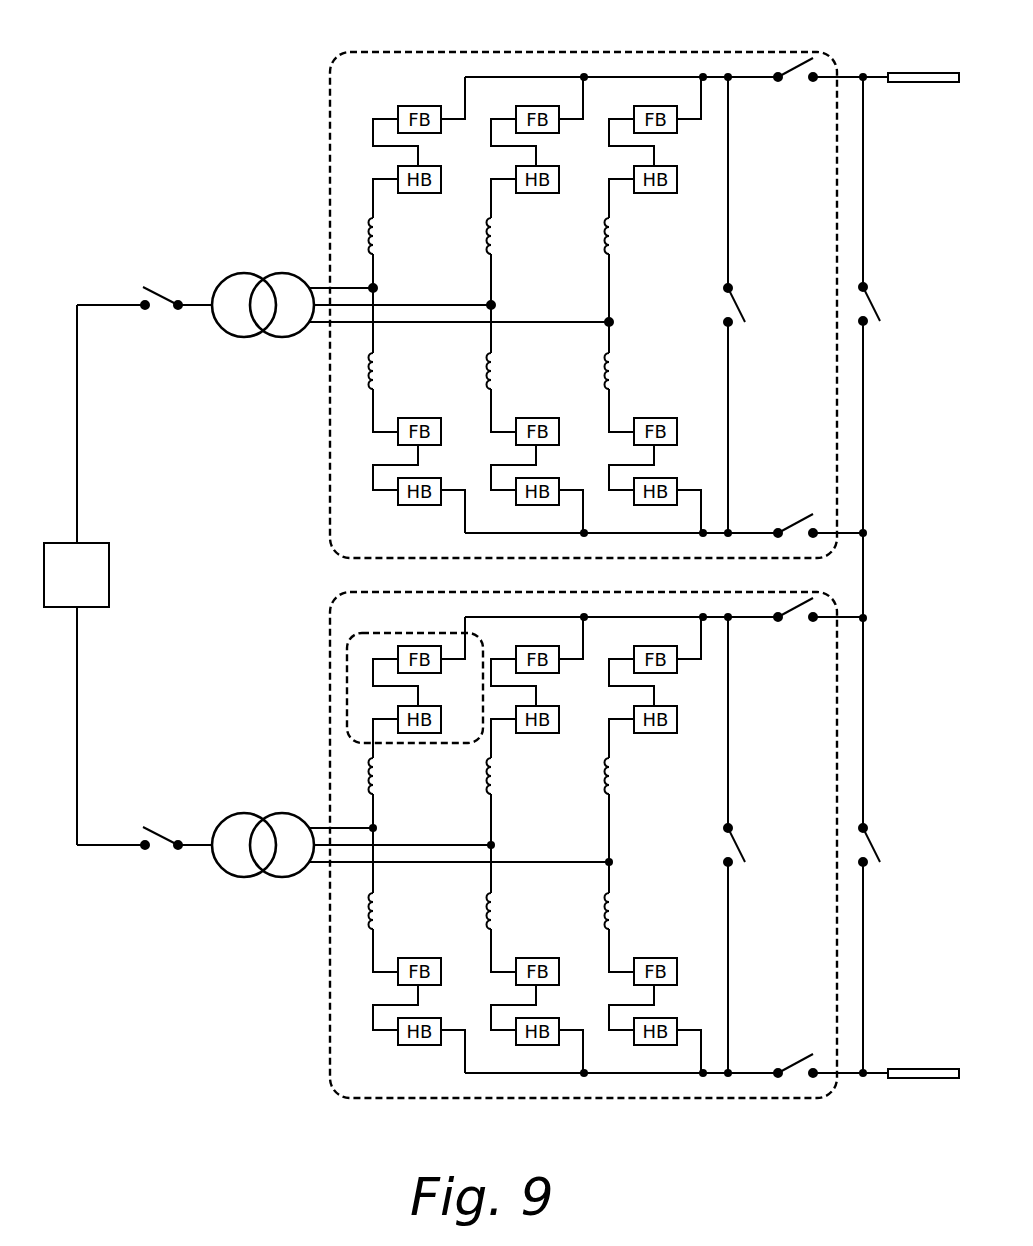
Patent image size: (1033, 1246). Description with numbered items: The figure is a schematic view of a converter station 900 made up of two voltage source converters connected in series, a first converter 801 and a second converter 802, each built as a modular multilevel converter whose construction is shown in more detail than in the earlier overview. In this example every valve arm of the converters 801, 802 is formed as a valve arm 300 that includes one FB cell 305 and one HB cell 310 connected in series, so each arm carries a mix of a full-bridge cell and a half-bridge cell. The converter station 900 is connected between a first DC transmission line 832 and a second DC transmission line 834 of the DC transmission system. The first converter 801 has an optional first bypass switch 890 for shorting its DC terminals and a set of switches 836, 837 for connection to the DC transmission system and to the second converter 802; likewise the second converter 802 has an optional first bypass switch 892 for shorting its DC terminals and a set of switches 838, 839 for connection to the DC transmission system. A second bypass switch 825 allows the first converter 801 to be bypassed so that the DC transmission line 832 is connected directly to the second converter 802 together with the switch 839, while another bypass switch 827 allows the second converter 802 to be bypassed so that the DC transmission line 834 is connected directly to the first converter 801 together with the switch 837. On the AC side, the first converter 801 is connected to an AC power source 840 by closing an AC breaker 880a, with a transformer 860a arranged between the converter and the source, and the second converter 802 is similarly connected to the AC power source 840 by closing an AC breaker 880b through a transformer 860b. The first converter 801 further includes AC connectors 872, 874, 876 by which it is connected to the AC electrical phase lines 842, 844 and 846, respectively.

The converter station 900 is at (267, 158).
The first converter 801 is at (330, 88).
The second converter 802 is at (330, 628).
The valve arm 300 is at (363, 834).
The FB cell 305 is at (397, 667).
The HB cell 310 is at (397, 726).
The second bypass switch 825 is at (873, 303).
The bypass switch 827 is at (873, 845).
The DC transmission line 832 is at (923, 73).
The DC transmission line 834 is at (922, 1078).
The switch 836 is at (790, 80).
The switch 837 is at (795, 518).
The switch 838 is at (795, 1060).
The switch 839 is at (790, 620).
The AC power source 840 is at (109, 575).
The AC electrical phase line 842 is at (313, 285).
The AC electrical phase line 844 is at (433, 306).
The AC electrical phase line 846 is at (548, 323).
The transformer 860a is at (263, 335).
The transformer 860b is at (252, 875).
The AC connector 872 is at (374, 287).
The AC connector 874 is at (492, 304).
The AC connector 876 is at (610, 321).
The AC breaker 880a is at (158, 310).
The AC breaker 880b is at (152, 835).
The first bypass switch 890 is at (740, 305).
The first bypass switch 892 is at (740, 845).